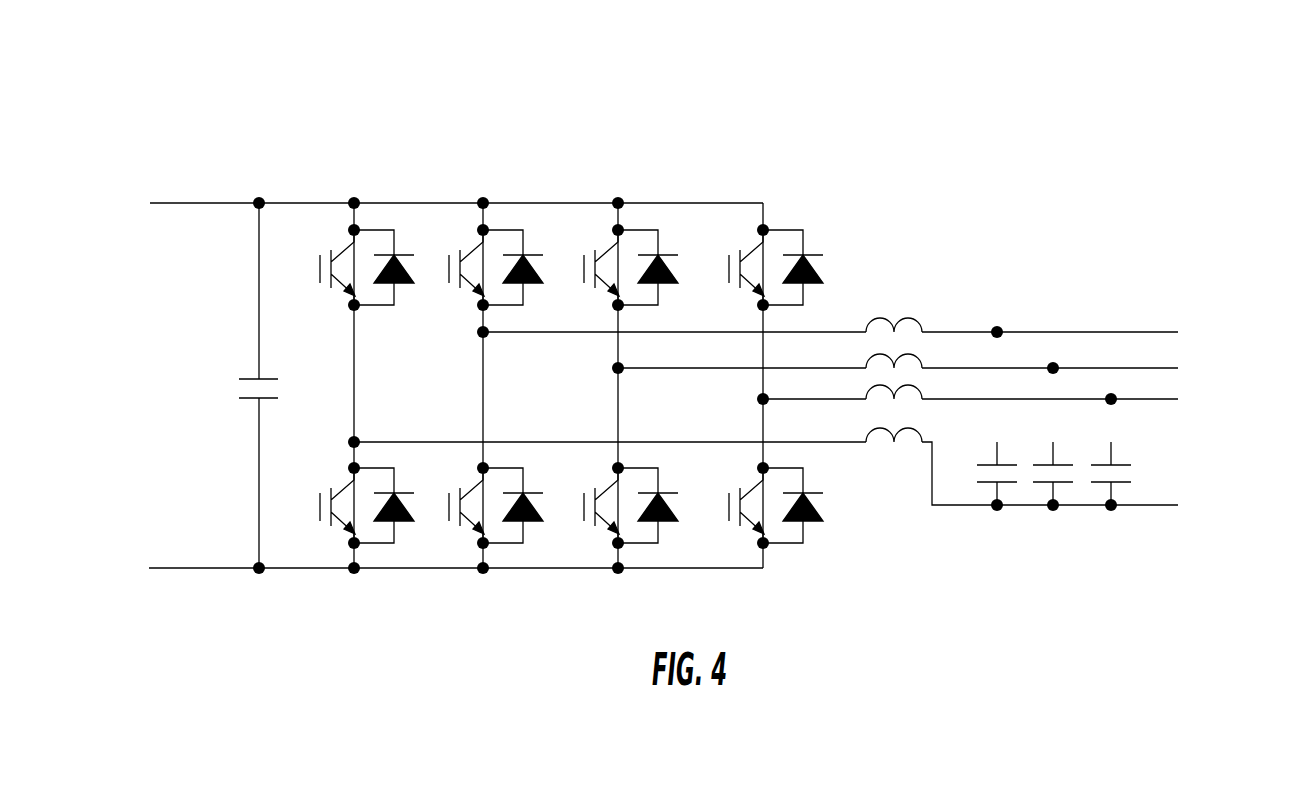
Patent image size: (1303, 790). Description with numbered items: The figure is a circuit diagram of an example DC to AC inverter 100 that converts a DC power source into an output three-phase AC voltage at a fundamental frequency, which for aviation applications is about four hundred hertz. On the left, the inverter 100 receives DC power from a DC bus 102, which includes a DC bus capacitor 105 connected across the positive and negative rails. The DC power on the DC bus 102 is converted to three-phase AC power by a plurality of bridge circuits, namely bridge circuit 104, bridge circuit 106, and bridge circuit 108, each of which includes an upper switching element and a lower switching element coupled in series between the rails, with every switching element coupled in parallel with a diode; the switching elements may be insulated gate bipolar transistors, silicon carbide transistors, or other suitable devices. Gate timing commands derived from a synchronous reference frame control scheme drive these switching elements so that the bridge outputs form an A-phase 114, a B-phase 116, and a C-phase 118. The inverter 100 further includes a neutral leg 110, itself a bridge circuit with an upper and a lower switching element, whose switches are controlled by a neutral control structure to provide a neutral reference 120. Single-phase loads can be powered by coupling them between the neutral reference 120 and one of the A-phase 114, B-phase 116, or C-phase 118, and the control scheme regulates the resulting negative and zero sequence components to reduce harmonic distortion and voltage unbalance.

The DC to AC inverter 100 is at (923, 90).
The DC bus 102 is at (205, 203).
The bridge circuit 104 is at (483, 388).
The DC bus capacitor 105 is at (259, 430).
The bridge circuit 106 is at (618, 402).
The bridge circuit 108 is at (767, 210).
The neutral leg 110 is at (354, 368).
The A-phase 114 is at (947, 331).
The B-phase 116 is at (1165, 368).
The C-phase 118 is at (1152, 399).
The neutral reference 120 is at (950, 505).